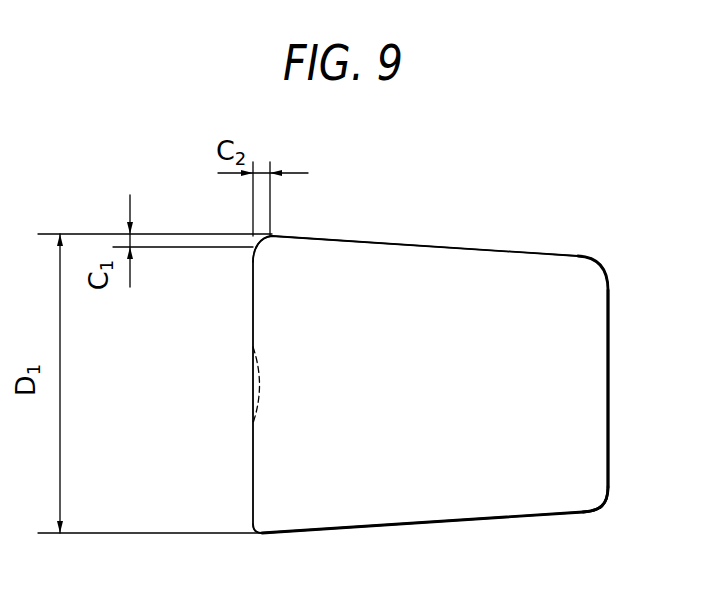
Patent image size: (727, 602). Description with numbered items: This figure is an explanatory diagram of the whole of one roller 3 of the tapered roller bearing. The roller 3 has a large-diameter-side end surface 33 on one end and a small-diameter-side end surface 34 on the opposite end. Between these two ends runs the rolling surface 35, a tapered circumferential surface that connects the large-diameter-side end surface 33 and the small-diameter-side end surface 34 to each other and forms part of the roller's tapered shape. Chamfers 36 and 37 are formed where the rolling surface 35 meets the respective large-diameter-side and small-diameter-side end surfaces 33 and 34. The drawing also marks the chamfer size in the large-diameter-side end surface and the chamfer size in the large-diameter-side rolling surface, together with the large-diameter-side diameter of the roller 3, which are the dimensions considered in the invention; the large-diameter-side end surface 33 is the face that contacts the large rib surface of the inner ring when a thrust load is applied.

The roller 3 is at (470, 490).
The large-diameter-side end surface 33 is at (252, 270).
The small-diameter-side end surface 34 is at (610, 330).
The rolling surface 35 is at (497, 250).
The chamfer 36 is at (252, 531).
The chamfer 37 is at (603, 507).